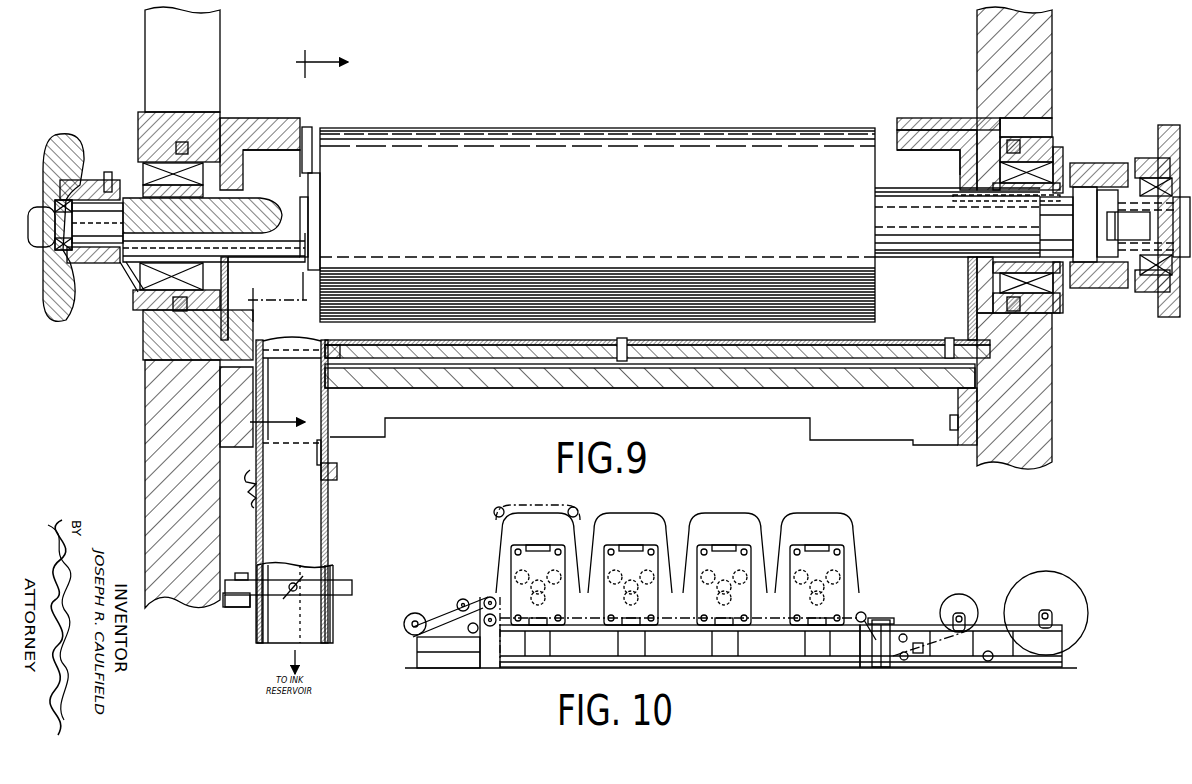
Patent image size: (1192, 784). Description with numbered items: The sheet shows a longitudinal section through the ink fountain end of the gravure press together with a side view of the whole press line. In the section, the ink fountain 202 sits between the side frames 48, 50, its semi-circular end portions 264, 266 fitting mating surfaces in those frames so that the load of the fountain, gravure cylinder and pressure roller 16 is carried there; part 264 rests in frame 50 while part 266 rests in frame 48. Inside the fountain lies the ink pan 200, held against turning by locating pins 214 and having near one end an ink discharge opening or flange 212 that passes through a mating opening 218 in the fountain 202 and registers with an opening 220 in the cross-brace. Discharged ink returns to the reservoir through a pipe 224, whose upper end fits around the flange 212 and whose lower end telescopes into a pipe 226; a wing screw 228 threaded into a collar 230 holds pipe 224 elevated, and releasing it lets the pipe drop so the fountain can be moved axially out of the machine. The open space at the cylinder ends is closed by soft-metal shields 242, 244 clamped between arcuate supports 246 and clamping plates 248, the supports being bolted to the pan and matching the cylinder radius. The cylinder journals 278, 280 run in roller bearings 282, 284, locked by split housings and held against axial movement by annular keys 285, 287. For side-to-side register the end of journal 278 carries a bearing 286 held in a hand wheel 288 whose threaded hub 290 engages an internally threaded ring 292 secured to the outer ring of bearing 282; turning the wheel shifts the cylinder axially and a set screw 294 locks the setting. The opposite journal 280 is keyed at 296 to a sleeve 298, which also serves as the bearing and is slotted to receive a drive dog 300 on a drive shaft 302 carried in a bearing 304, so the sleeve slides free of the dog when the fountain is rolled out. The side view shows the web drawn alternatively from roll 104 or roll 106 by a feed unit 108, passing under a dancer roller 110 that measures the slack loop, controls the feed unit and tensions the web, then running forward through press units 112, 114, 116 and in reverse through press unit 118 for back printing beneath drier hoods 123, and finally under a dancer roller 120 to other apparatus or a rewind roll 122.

In FIG. 9, the pressure roller 16 is at (317, 236).
In FIG. 9, the side frame 48 is at (1052, 405).
In FIG. 9, the side frame 50 is at (148, 385).
In FIG. 9, the ink pan 200 is at (495, 345).
In FIG. 9, the ink fountain 202 is at (553, 350).
In FIG. 9, the ink discharge opening 212 is at (321, 343).
In FIG. 9, the locating pilots 214 is at (627, 356).
In FIG. 9, the opening 218 is at (340, 352).
In FIG. 9, the opening 220 is at (340, 384).
In FIG. 9, the pipe 224 is at (330, 452).
In FIG. 9, the pipe 226 is at (333, 537).
In FIG. 9, the wing screw 228 is at (250, 493).
In FIG. 9, the collar 230 is at (337, 478).
In FIG. 9, the curved strip 242 is at (312, 130).
In FIG. 9, the curved strip 244 is at (882, 130).
In FIG. 9, the arcuate supports 246 is at (300, 140).
In FIG. 9, the clamping plates 248 is at (265, 121).
In FIG. 9, the semi-circular end portion 264 is at (148, 355).
In FIG. 9, the semi-circular end portion 266 is at (1060, 310).
In FIG. 9, the journal 278 is at (267, 260).
In FIG. 9, the journal 280 is at (932, 258).
In FIG. 9, the roller bearing 282 is at (172, 276).
In FIG. 9, the roller bearing 284 is at (1030, 258).
In FIG. 9, the annular key 285 is at (182, 142).
In FIG. 9, the bearing 286 is at (75, 225).
In FIG. 9, the annular key 287 is at (1015, 138).
In FIG. 9, the hand wheel 288 is at (50, 140).
In FIG. 9, the threaded hub 290 is at (92, 265).
In FIG. 9, the internally threaded ring 292 is at (121, 280).
In FIG. 9, the set screw 294 is at (108, 172).
In FIG. 9, the key 296 is at (1022, 200).
In FIG. 9, the sleeve 298 is at (1090, 163).
In FIG. 9, the drive dog 300 is at (1132, 160).
In FIG. 9, the drive shaft 302 is at (1170, 200).
In FIG. 9, the bearing 304 is at (1150, 295).
In FIG. 10, the roll 104 is at (963, 595).
In FIG. 10, the roll 106 is at (1047, 580).
In FIG. 10, the feed unit 108 is at (905, 633).
In FIG. 10, the dancer roller 110 is at (872, 647).
In FIG. 10, the press unit 112 is at (843, 597).
In FIG. 10, the press unit 114 is at (744, 605).
In FIG. 10, the press unit 116 is at (650, 603).
In FIG. 10, the press unit 118 is at (517, 605).
In FIG. 10, the dancer roller 120 is at (472, 630).
In FIG. 10, the rewind roll 122 is at (419, 613).
In FIG. 10, the drier hoods 123 is at (572, 535).